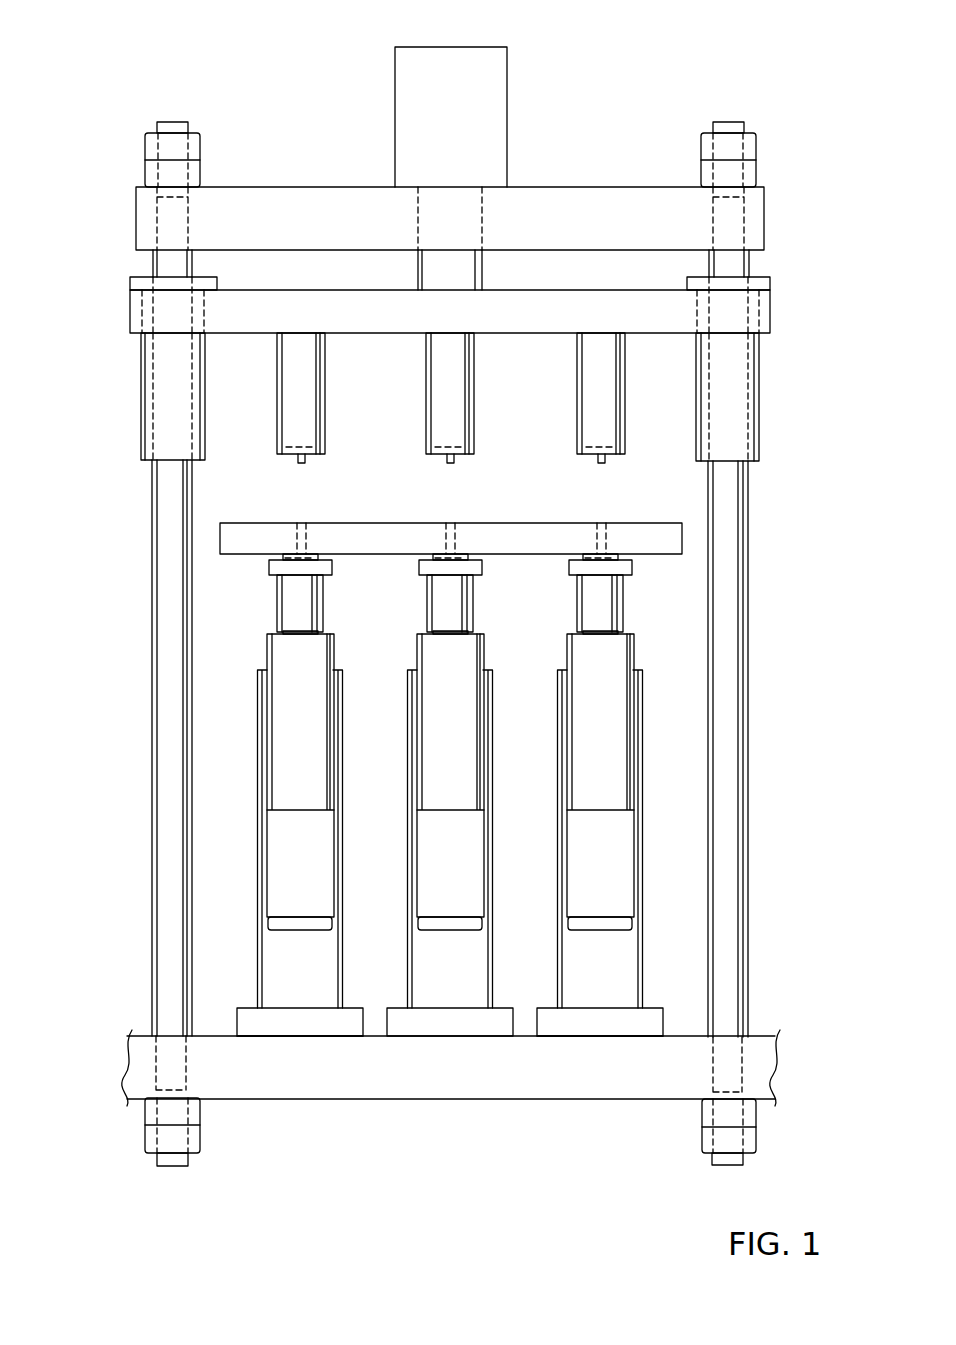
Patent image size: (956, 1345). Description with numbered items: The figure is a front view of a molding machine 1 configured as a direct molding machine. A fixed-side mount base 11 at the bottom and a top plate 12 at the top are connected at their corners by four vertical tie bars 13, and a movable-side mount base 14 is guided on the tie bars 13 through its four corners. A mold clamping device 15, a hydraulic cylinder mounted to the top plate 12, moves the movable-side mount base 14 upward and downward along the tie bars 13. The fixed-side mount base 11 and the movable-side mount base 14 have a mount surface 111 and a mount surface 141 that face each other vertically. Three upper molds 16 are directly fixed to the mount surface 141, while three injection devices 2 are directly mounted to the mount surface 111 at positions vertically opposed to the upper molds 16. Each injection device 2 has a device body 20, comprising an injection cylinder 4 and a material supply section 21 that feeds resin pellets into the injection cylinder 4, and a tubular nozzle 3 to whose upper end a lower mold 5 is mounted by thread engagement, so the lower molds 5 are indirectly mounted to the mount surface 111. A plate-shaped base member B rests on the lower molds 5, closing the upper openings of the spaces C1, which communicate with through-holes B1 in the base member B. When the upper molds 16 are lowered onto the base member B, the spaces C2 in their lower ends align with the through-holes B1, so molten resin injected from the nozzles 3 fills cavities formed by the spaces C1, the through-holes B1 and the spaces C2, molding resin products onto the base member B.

The molding machine 1 is at (566, 60).
The injection device 2 is at (354, 799).
The tubular nozzle 3 is at (290, 600).
The injection cylinder 4 is at (282, 703).
The lower mold 5 is at (572, 562).
The fixed-side mount base 11 is at (563, 1078).
The top plate 12 is at (341, 200).
The tie bar 13 is at (165, 850).
The movable-side mount base 14 is at (625, 305).
The mold clamping device 15 is at (468, 105).
The upper mold 16 is at (590, 410).
The device body 20 is at (354, 835).
The material supply section 21 is at (258, 763).
The mount surface 111 is at (687, 1035).
The mount surface 141 is at (670, 335).
The base member B is at (532, 532).
The through-hole B1 is at (607, 543).
The space C1 is at (617, 565).
The space C2 is at (603, 460).